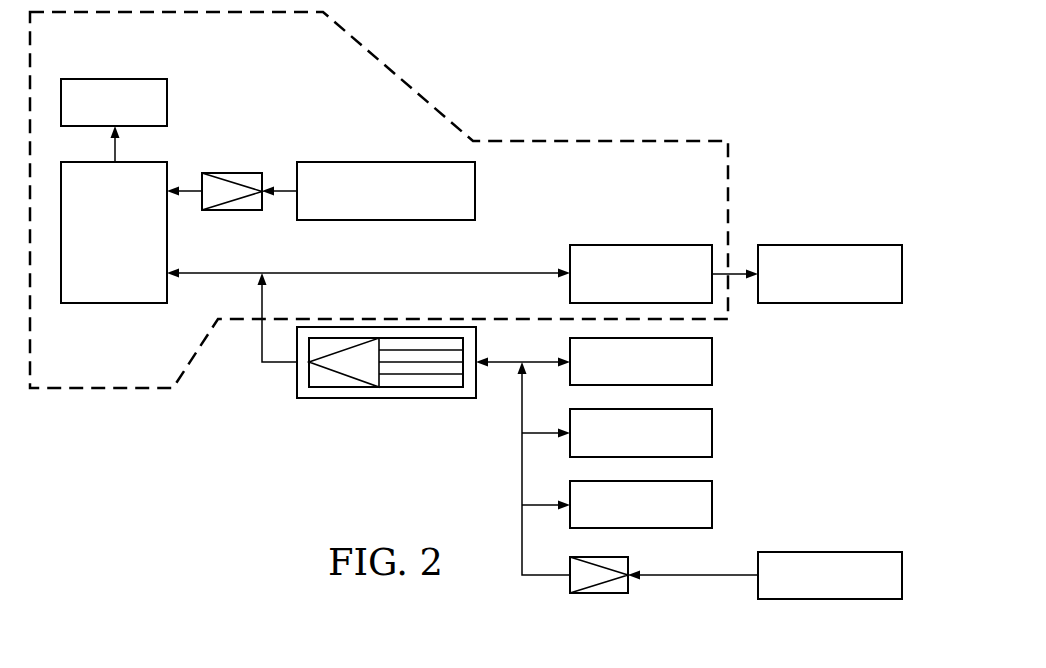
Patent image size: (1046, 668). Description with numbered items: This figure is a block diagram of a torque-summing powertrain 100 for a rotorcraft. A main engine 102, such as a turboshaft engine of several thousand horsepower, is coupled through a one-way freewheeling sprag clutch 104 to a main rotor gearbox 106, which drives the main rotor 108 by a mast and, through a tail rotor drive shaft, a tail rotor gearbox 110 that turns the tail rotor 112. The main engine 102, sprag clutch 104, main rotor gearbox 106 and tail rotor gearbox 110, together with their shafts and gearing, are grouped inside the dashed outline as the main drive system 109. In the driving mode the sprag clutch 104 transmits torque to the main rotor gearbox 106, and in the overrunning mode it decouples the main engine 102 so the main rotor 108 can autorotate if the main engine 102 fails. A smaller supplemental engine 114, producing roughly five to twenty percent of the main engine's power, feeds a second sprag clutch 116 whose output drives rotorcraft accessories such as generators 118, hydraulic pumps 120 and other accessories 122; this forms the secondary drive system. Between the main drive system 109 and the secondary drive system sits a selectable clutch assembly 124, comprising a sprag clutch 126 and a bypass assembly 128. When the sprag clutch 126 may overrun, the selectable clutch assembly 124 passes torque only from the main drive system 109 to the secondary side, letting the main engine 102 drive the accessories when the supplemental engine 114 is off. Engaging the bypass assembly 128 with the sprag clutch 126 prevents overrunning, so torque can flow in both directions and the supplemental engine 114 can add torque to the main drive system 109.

The torque-summing powertrain 100 is at (781, 84).
The main engine 102 is at (385, 162).
The sprag clutch 104 is at (232, 173).
The main rotor gearbox 106 is at (101, 303).
The main rotor 108 is at (103, 78).
The main drive system 109 is at (112, 396).
The tail rotor gearbox 110 is at (640, 245).
The tail rotor 112 is at (830, 245).
The supplemental engine 114 is at (830, 600).
The sprag clutch 116 is at (600, 593).
The generators 118 is at (712, 516).
The hydraulic pumps 120 is at (712, 444).
The other accessories 122 is at (712, 373).
The selectable clutch assembly 124 is at (383, 393).
The sprag clutch 126 is at (330, 387).
The bypass assembly 128 is at (428, 387).